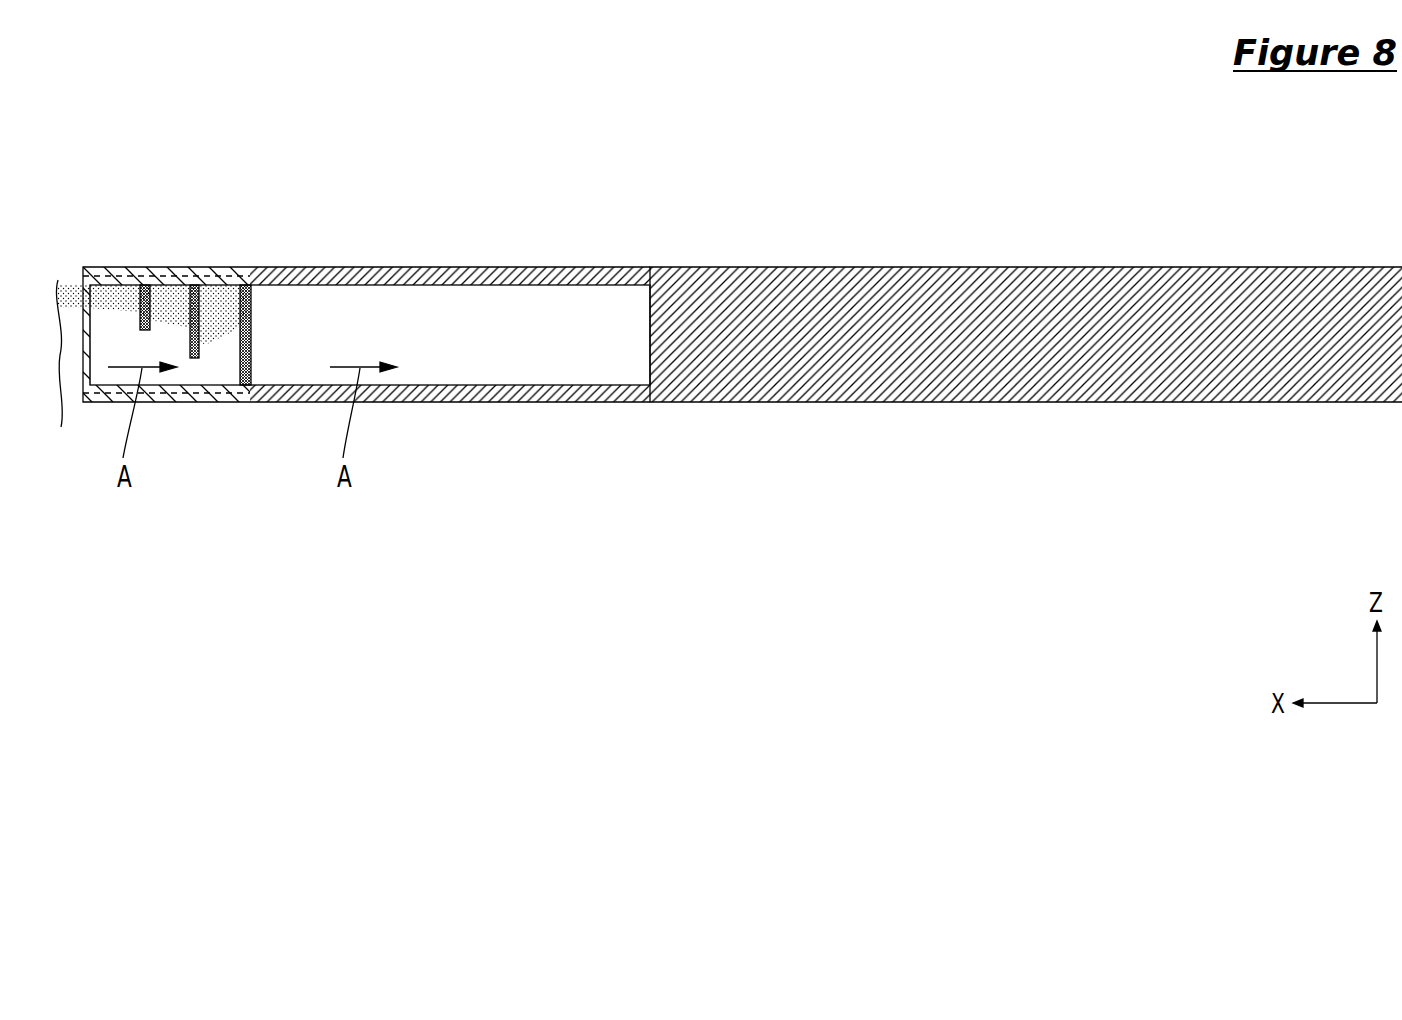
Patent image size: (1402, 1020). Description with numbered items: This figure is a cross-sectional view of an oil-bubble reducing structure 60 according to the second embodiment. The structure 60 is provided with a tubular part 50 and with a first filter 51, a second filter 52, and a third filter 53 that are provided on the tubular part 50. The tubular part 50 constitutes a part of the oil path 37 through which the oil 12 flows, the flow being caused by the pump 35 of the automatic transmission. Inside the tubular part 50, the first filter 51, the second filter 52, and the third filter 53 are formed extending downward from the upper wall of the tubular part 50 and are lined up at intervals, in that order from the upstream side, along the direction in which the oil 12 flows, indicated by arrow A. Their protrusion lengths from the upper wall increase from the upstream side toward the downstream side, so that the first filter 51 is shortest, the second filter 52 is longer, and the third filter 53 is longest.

The oil 12 is at (72, 288).
The pump 35 is at (985, 402).
The oil path 37 is at (503, 385).
The tubular part 50 is at (107, 283).
The first filter 51 is at (140, 313).
The second filter 52 is at (190, 349).
The third filter 53 is at (239, 369).
The oil-bubble reducing structure 60 is at (170, 234).